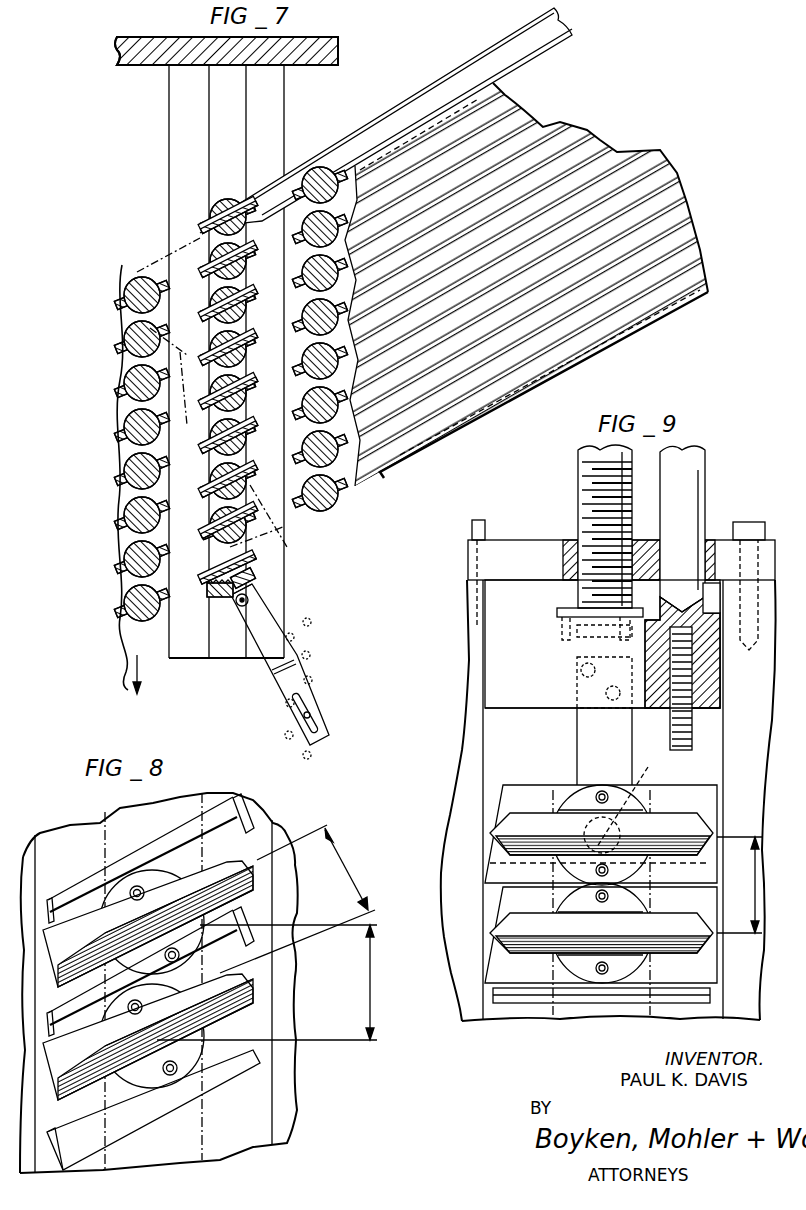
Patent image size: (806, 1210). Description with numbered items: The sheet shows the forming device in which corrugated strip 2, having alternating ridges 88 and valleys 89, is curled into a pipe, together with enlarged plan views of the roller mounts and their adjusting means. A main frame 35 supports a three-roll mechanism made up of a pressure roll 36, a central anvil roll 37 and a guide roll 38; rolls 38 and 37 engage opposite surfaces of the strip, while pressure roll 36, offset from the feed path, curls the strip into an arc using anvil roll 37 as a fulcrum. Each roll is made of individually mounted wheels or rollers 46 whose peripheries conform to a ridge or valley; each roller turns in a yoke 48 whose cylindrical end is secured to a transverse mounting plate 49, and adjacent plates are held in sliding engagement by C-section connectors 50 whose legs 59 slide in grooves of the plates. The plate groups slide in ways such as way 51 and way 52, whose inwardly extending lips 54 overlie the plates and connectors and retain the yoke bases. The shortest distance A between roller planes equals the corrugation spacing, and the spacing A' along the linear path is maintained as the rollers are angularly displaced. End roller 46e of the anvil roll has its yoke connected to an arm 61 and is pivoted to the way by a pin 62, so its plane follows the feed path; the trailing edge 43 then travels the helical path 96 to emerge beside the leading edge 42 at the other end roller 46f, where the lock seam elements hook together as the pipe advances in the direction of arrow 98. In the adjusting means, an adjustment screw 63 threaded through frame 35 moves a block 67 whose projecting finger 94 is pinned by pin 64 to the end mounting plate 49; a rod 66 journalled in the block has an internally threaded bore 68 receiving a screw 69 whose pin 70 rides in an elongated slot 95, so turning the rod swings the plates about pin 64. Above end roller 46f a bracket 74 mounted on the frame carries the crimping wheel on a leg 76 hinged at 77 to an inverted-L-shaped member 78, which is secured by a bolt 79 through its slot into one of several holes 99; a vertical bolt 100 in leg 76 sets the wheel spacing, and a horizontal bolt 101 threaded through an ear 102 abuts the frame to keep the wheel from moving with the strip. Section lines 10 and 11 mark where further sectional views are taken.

In FIG. 7, the strip 2 is at (653, 157).
In FIG. 7, the main frame 35 is at (140, 67).
In FIG. 9, the main frame 35 is at (517, 540).
In FIG. 7, the pressure roll 36 is at (114, 337).
In FIG. 7, the central anvil roll 37 is at (251, 362).
In FIG. 7, the guide roll 38 is at (314, 158).
In FIG. 7, the leading edge 42 is at (428, 452).
In FIG. 7, the trailing edge 43 is at (357, 123).
In FIG. 7, the wheels or rollers 46 is at (210, 290).
In FIG. 8, the wheels or rollers 46 is at (75, 960).
In FIG. 9, the wheels or rollers 46 is at (500, 835).
In FIG. 7, the end roller 46e is at (252, 200).
In FIG. 7, the end roller 46f is at (251, 560).
In FIG. 7, the yoke 48 is at (127, 362).
In FIG. 9, the yoke 48 is at (565, 800).
In FIG. 7, the mounting plate 49 is at (240, 237).
In FIG. 8, the mounting plate 49 is at (47, 932).
In FIG. 9, the mounting plate 49 is at (517, 790).
In FIG. 8, the C-section connectors 50 is at (167, 853).
In FIG. 9, the C-section connectors 50 is at (495, 893).
In FIG. 9, the way 51 is at (733, 997).
In FIG. 7, the way 52 is at (215, 659).
In FIG. 7, the lips 54 is at (186, 659).
In FIG. 8, the lips 54 is at (68, 822).
In FIG. 9, the lips 54 is at (553, 1010).
In FIG. 8, the legs 59 is at (55, 1022).
In FIG. 9, the legs 59 is at (600, 1003).
In FIG. 7, the arm 61 is at (497, 45).
In FIG. 7, the pin 62 is at (223, 213).
In FIG. 9, the adjustment screw 63 is at (578, 472).
In FIG. 9, the pin 64 is at (622, 801).
In FIG. 9, the rod 66 is at (705, 478).
In FIG. 9, the block 67 is at (529, 663).
In FIG. 9, the internally threaded bore 68 is at (692, 660).
In FIG. 9, the screw 69 is at (685, 767).
In FIG. 9, the pin 70 is at (671, 873).
In FIG. 7, the bracket 74 is at (328, 740).
In FIG. 7, the leg 76 is at (277, 672).
In FIG. 7, the hinge 77 is at (303, 672).
In FIG. 7, the inverted-L-shaped member 78 is at (315, 703).
In FIG. 7, the bolt 79 is at (312, 715).
In FIG. 7, the ridges 88 is at (515, 92).
In FIG. 7, the valleys 89 is at (562, 118).
In FIG. 9, the projecting finger 94 is at (614, 756).
In FIG. 9, the elongated slot 95 is at (727, 820).
In FIG. 7, the helical path 96 is at (140, 265).
In FIG. 7, the arrow 98 is at (130, 690).
In FIG. 7, the holes 99 is at (313, 625).
In FIG. 7, the bolt 100 is at (248, 601).
In FIG. 7, the bolt 101 is at (254, 576).
In FIG. 7, the ear 102 is at (222, 598).
In FIG. 7, the section line 10- 10 is at (280, 468).
In FIG. 7, the section line 11- 11 is at (213, 530).
In FIG. 8, the shortest distance A is at (297, 899).
In FIG. 9, the shortest distance A is at (754, 885).
In FIG. 8, the spacing A' is at (278, 982).